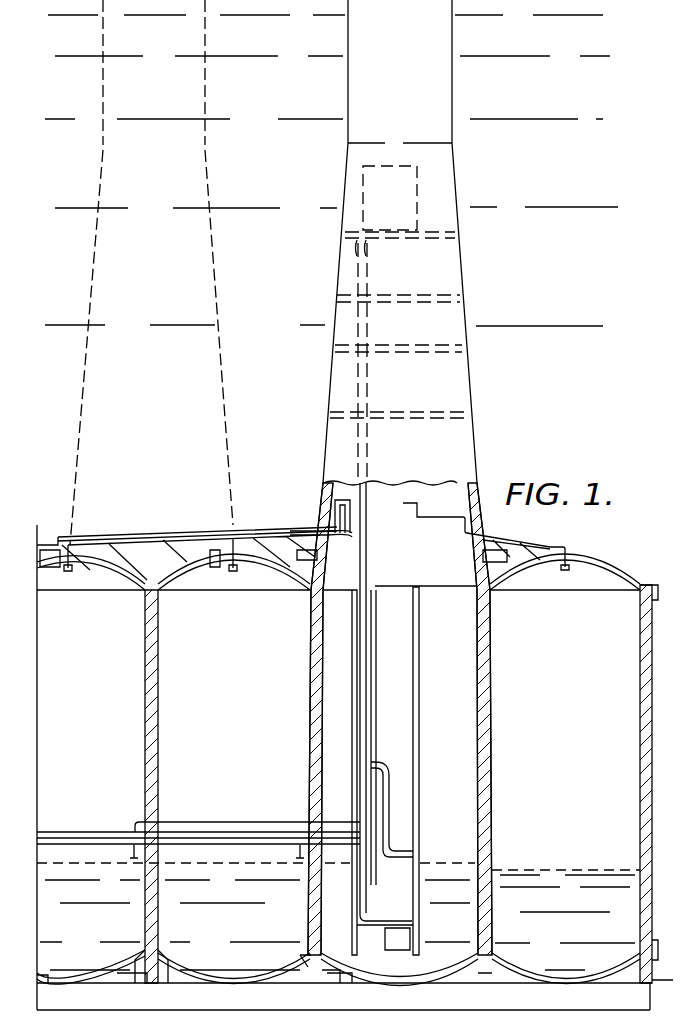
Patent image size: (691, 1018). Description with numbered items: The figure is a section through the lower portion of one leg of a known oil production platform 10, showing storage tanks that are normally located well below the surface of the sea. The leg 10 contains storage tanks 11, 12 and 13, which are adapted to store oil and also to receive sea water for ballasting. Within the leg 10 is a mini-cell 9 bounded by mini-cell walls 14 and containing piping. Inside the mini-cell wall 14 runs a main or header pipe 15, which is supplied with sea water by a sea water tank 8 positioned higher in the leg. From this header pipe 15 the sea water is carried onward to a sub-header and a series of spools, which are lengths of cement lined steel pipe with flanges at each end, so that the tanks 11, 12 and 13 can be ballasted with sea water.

The sea water tank 8 is at (404, 213).
The mini-cell 9 is at (402, 706).
The leg of oil platform 10 is at (488, 433).
The storage tank 11 is at (92, 746).
The storage tank 12 is at (246, 746).
The storage tank 13 is at (572, 744).
The mini-cell wall 14 is at (418, 754).
The main or header pipe 15 is at (368, 560).